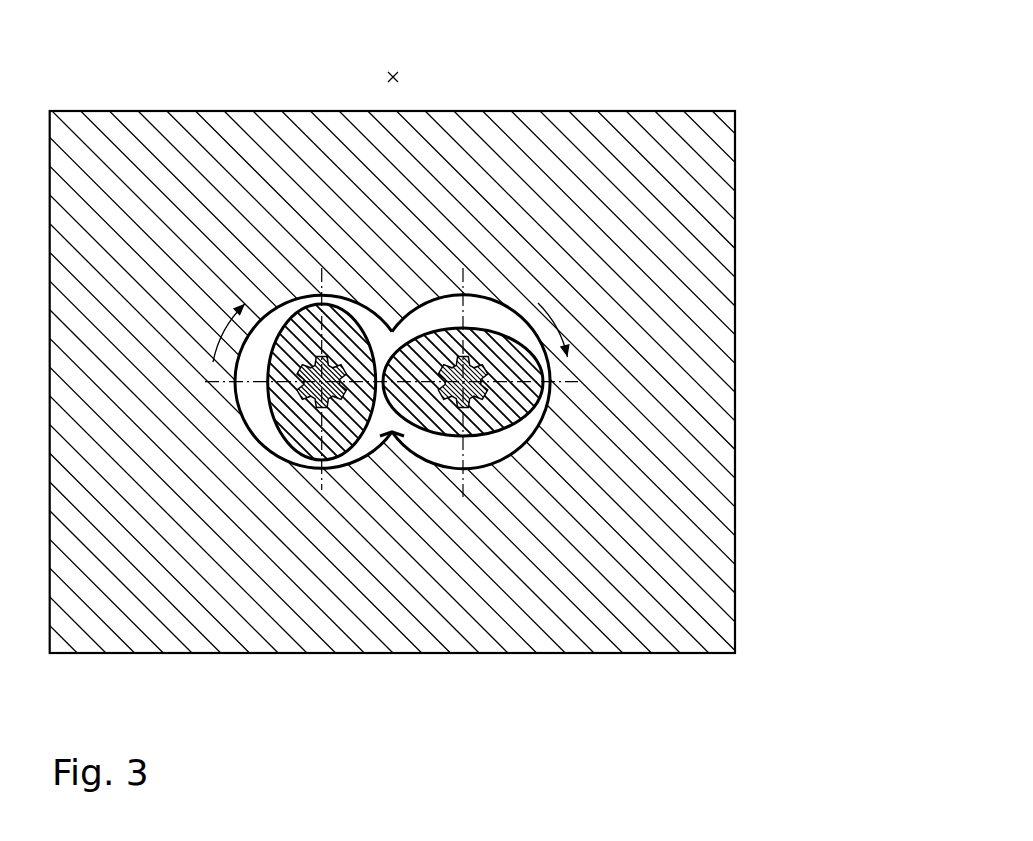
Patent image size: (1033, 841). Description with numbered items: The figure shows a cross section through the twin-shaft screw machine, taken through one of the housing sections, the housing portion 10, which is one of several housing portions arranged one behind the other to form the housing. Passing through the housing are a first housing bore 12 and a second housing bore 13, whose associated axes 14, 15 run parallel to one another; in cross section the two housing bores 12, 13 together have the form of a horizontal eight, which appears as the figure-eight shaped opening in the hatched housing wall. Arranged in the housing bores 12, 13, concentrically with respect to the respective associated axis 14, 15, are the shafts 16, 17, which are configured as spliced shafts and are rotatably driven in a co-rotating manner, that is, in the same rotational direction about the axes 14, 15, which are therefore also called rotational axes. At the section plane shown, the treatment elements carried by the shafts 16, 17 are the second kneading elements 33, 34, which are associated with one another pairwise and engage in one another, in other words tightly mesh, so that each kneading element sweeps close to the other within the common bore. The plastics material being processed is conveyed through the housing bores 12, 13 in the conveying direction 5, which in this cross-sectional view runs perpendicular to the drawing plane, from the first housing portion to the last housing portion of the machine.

The conveying direction 5 is at (390, 72).
The housing portion 10 is at (557, 100).
The first housing bore 12 is at (475, 308).
The second housing bore 13 is at (248, 404).
The axis 14 is at (534, 424).
The axis 15 is at (350, 462).
The shaft 16 is at (517, 372).
The shaft 17 is at (316, 406).
The second kneading element 33 is at (453, 337).
The second kneading element 34 is at (375, 440).